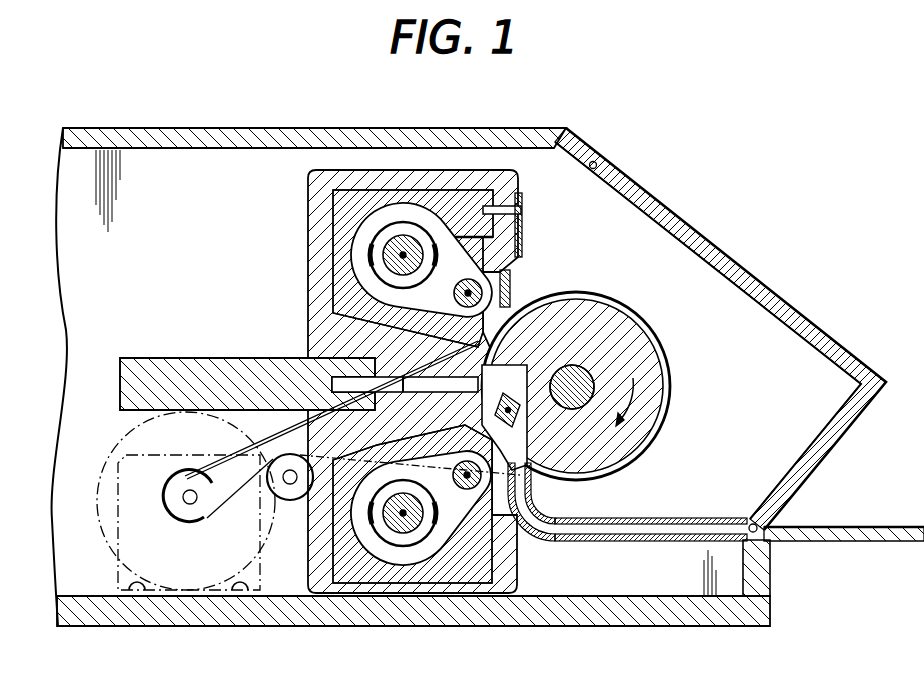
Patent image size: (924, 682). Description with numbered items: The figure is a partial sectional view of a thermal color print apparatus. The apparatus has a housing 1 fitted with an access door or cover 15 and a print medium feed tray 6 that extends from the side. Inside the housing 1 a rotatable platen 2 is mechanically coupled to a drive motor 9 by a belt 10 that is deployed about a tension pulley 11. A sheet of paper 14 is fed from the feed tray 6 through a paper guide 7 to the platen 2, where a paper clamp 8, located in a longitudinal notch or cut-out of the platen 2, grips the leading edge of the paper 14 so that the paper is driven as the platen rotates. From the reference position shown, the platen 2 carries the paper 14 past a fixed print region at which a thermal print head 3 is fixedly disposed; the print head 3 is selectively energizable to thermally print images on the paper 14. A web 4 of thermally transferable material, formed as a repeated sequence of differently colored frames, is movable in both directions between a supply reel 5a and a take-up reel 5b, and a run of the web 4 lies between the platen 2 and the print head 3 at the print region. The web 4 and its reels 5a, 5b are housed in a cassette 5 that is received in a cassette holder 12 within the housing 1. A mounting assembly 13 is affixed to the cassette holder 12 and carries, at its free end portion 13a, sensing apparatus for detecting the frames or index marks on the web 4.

The housing 1 is at (404, 128).
The rotatable platen 2 is at (647, 388).
The thermal print head 3 is at (425, 392).
The web 4 is at (466, 490).
The cassette 5 is at (362, 574).
The supply reel 5a is at (403, 533).
The take-up reel 5b is at (365, 258).
The print medium feed tray 6 is at (888, 543).
The paper guide 7 is at (636, 542).
The paper clamp 8 is at (514, 396).
The drive motor 9 is at (108, 452).
The belt 10 is at (247, 488).
The tension pulley 11 is at (287, 500).
The cassette holder 12 is at (308, 208).
The mounting assembly 13 is at (511, 296).
The free end portion 13a is at (513, 266).
The sheet of paper 14 is at (660, 518).
The cover 15 is at (727, 262).